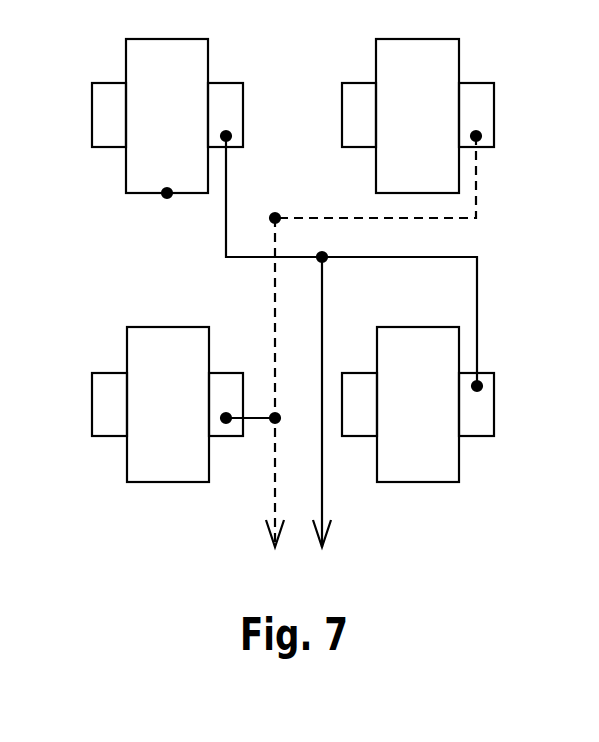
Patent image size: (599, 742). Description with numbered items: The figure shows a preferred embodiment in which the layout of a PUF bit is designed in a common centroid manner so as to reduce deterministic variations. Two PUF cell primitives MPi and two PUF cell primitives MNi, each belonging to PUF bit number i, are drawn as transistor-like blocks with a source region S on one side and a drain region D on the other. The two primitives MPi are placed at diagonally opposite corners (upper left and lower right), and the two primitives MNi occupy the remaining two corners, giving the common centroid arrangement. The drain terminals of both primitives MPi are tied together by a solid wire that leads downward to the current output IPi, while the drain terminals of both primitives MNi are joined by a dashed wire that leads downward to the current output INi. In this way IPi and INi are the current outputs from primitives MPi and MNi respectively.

The PUF cell primitive MPi is at (293, 260).
The PUF cell primitive MNi is at (293, 260).
The current output IPi is at (351, 342).
The current output INi is at (343, 342).